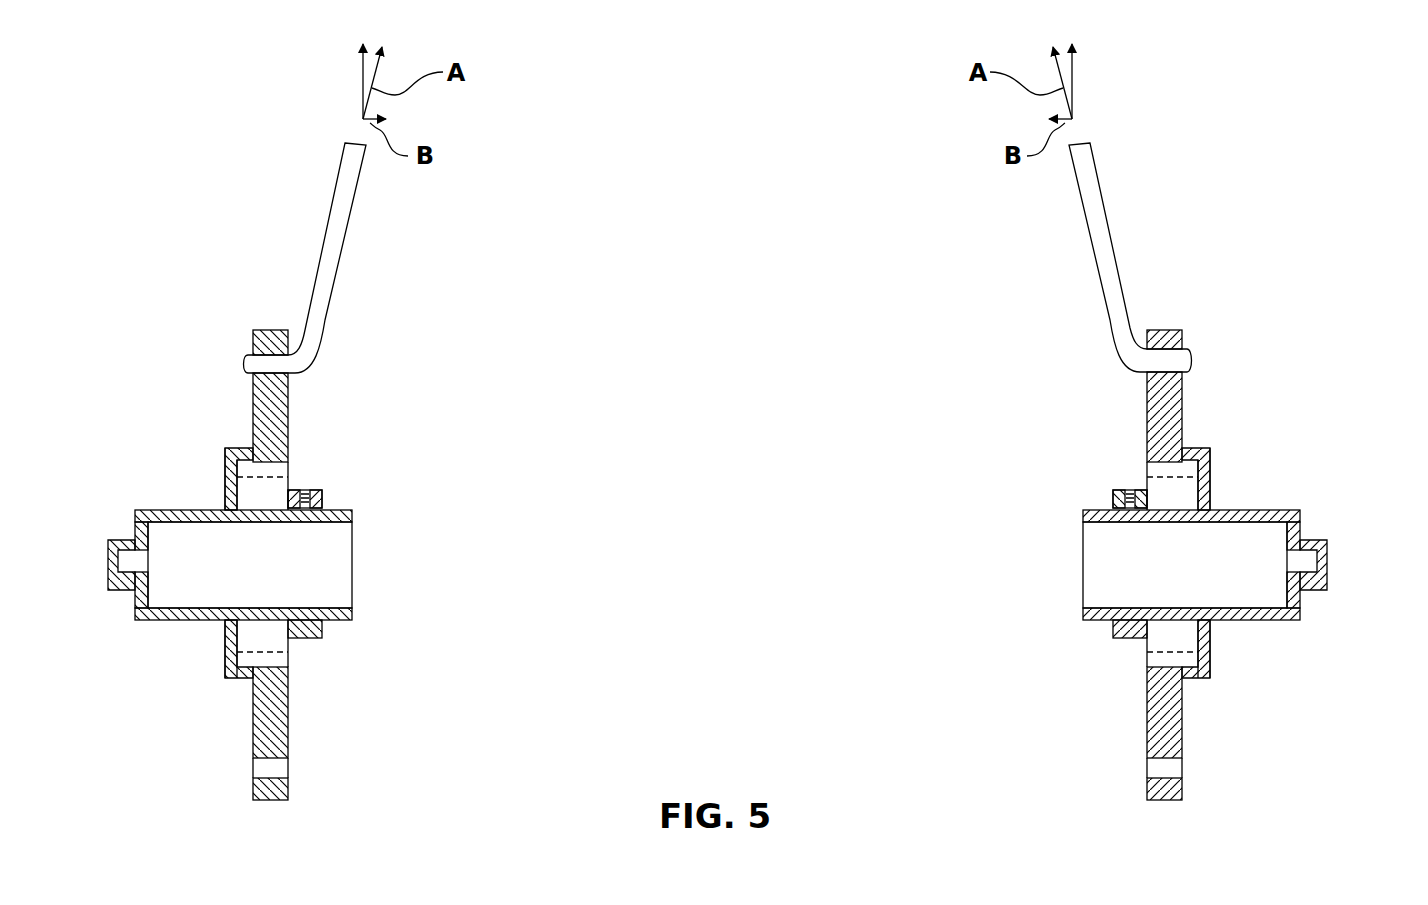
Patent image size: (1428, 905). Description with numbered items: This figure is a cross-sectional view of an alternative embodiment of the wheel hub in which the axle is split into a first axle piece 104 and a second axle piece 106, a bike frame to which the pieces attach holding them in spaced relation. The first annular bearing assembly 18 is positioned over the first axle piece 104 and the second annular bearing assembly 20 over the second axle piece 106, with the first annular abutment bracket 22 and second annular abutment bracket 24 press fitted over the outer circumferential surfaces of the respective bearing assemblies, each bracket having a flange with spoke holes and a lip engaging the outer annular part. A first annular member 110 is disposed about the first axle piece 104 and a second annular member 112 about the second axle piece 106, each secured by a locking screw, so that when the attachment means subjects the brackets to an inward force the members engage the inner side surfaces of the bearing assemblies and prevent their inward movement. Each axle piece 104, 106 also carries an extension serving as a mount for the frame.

The first annular bearing assembly 18 is at (188, 578).
The second annular bearing assembly 20 is at (1248, 578).
The first annular abutment bracket 22 is at (303, 491).
The second annular abutment bracket 24 is at (1136, 491).
The first axle piece 104 is at (180, 588).
The second axle piece 106 is at (1255, 588).
The first annular member 110 is at (305, 492).
The second annular member 112 is at (1113, 500).